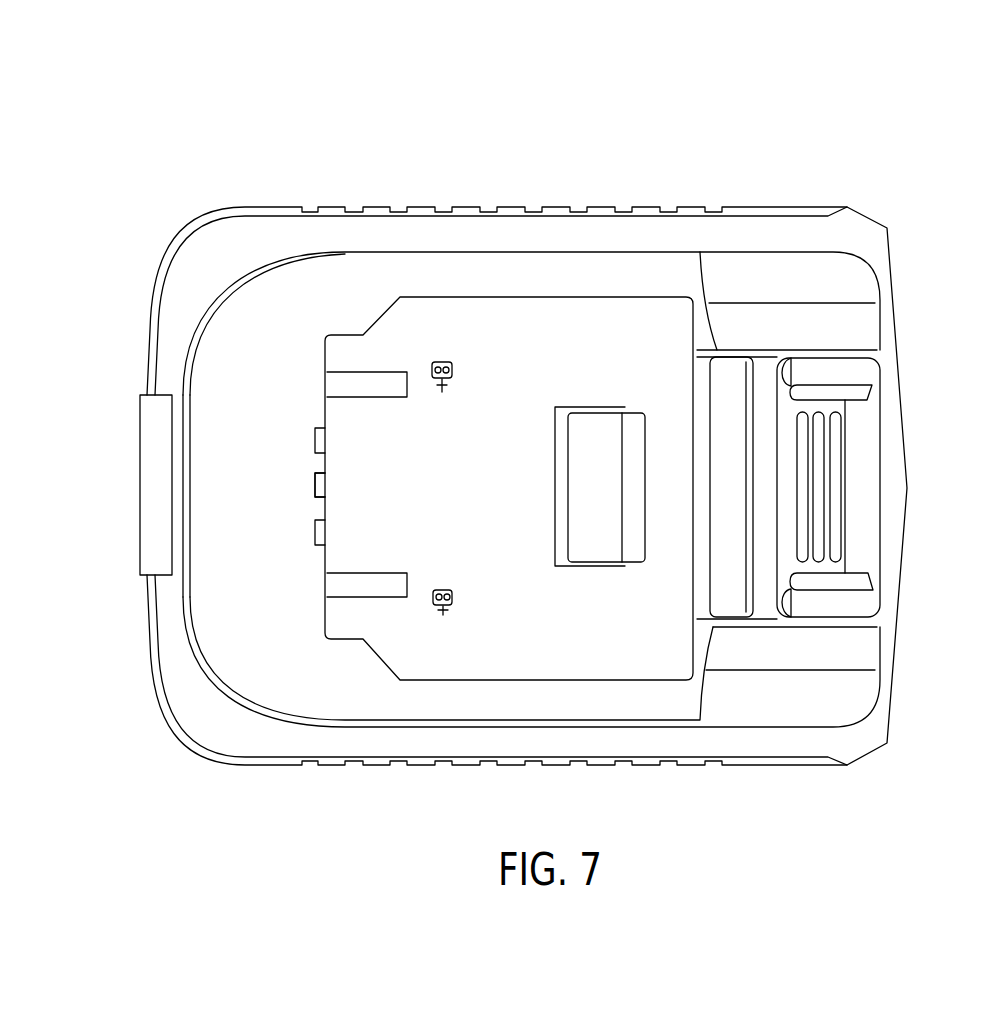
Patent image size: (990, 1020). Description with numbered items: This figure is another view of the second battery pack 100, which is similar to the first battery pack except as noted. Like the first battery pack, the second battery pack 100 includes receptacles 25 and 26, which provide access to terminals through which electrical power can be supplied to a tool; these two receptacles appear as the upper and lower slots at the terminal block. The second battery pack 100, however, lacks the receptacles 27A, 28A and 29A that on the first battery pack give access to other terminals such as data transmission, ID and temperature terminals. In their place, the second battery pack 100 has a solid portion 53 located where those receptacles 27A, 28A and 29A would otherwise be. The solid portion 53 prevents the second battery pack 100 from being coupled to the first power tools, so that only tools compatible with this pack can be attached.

The second battery pack 100 is at (920, 124).
The receptacle 25 is at (370, 383).
The receptacle 26 is at (373, 580).
The solid portion 53 is at (358, 407).
The receptacle 27A is at (313, 440).
The receptacle 28A is at (313, 487).
The receptacle 29A is at (313, 537).